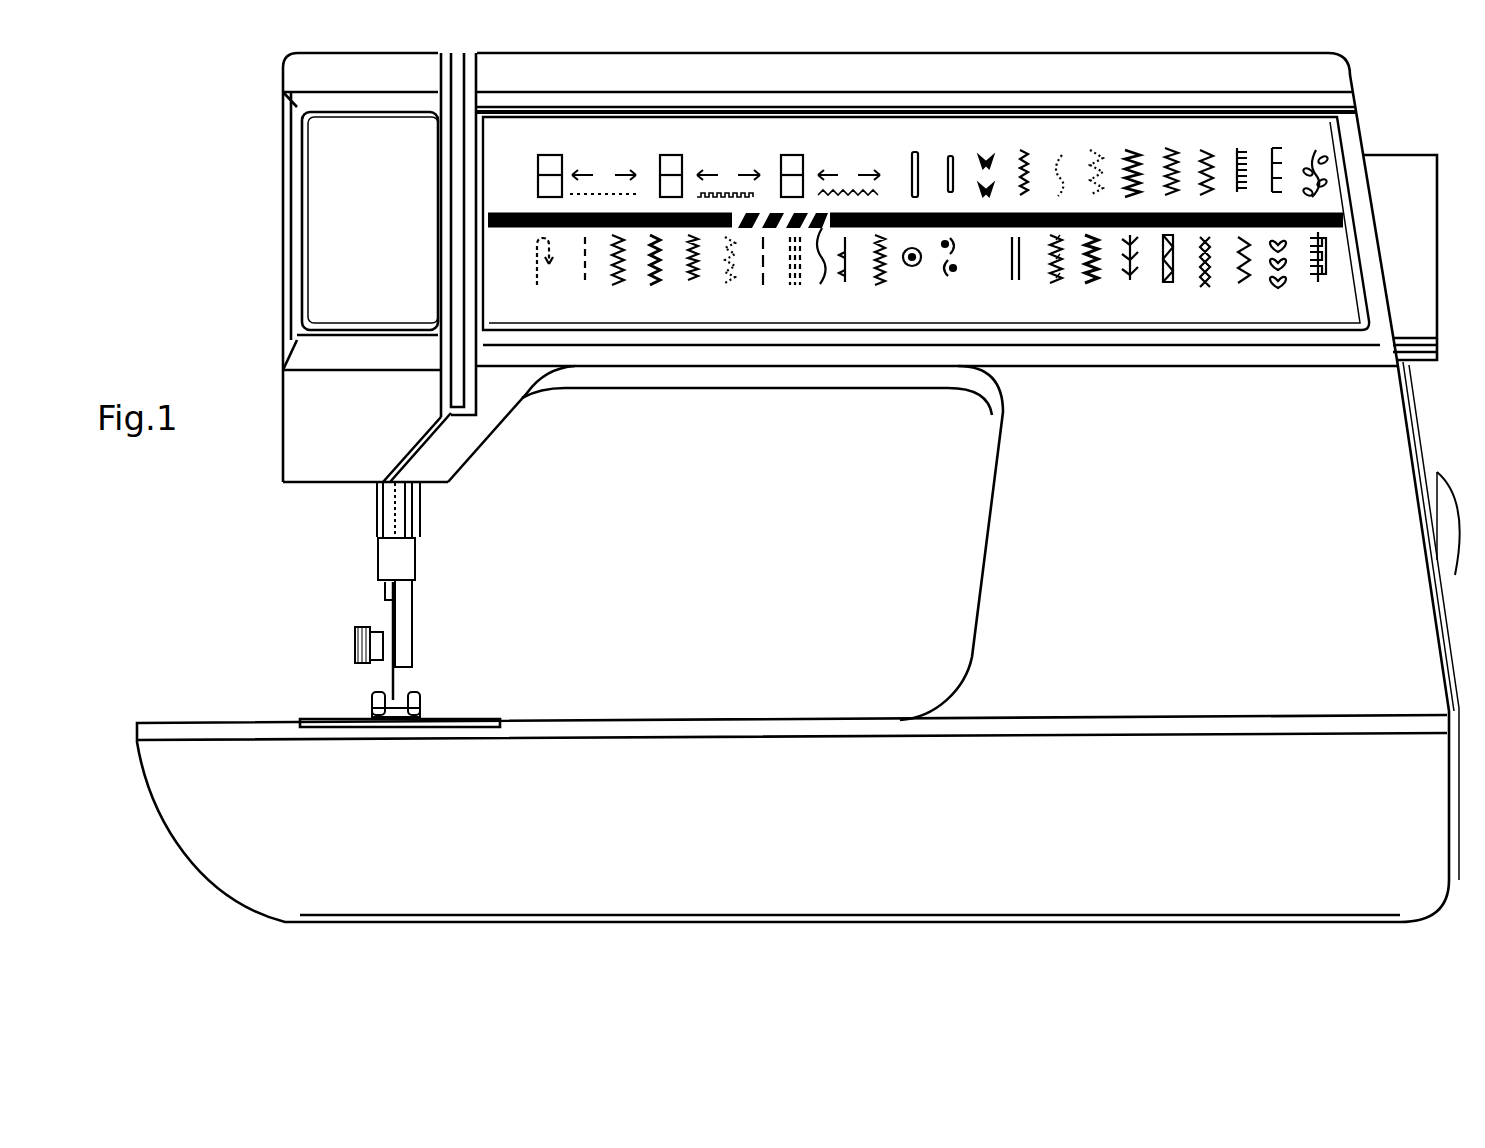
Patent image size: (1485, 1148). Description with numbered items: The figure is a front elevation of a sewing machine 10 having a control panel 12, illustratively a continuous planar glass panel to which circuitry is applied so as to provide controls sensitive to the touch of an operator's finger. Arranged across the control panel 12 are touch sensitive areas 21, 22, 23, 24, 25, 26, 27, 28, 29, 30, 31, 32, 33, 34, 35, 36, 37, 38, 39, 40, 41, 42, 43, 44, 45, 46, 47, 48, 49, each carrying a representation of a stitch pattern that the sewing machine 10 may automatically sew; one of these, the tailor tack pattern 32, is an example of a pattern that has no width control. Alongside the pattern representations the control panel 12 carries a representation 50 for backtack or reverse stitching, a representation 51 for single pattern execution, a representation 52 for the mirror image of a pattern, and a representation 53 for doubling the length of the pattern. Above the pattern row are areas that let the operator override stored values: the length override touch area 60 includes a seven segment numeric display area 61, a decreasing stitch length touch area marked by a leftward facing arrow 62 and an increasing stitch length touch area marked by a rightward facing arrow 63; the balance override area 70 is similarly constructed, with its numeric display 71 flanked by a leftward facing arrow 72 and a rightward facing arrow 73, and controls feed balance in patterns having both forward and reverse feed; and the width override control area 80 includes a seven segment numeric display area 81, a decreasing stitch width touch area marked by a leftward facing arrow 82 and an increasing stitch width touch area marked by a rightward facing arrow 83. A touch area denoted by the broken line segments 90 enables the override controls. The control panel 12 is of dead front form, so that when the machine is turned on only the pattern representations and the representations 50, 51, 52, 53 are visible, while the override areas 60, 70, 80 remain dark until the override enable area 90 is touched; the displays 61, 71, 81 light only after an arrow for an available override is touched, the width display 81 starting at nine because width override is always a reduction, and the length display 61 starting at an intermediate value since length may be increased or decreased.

The sewing machine 10 is at (254, 130).
The control panel 12 is at (1330, 130).
The touch sensitive area 21 is at (585, 285).
The touch sensitive area 22 is at (618, 285).
The touch sensitive area 23 is at (655, 285).
The touch sensitive area 24 is at (696, 280).
The touch sensitive area 25 is at (730, 283).
The touch sensitive area 26 is at (763, 285).
The touch sensitive area 27 is at (795, 285).
The touch sensitive area 28 is at (845, 282).
The touch sensitive area 29 is at (880, 285).
The touch sensitive area 30 is at (919, 168).
The touch sensitive area 31 is at (951, 155).
The tailor tack pattern 32 is at (988, 155).
The touch sensitive area 33 is at (1024, 150).
The touch sensitive area 34 is at (1060, 155).
The touch sensitive area 35 is at (1097, 150).
The touch sensitive area 36 is at (1132, 155).
The touch sensitive area 37 is at (1170, 150).
The touch sensitive area 38 is at (1215, 135).
The touch sensitive area 39 is at (1240, 148).
The touch sensitive area 40 is at (1282, 165).
The touch sensitive area 41 is at (1315, 150).
The touch sensitive area 42 is at (1055, 280).
The touch sensitive area 43 is at (1090, 283).
The touch sensitive area 44 is at (1130, 280).
The touch sensitive area 45 is at (1165, 282).
The touch sensitive area 46 is at (1205, 282).
The touch sensitive area 47 is at (1244, 283).
The touch sensitive area 48 is at (1278, 282).
The touch sensitive area 49 is at (1318, 282).
The backtack representation 50 is at (537, 284).
The single pattern representation 51 is at (912, 266).
The mirror image representation 52 is at (950, 275).
The double stitch length representation 53 is at (985, 270).
The length override touch area 60 is at (597, 118).
The numeric display area 61 is at (538, 185).
The decreasing stitch length touch area 62 is at (574, 178).
The increasing stitch length touch area 63 is at (636, 168).
The balance override area 70 is at (718, 128).
The numeric display 71 is at (670, 153).
The balance decrease key 72 is at (697, 176).
The balance increase key 73 is at (760, 172).
The width override control area 80 is at (845, 128).
The numeric display area 81 is at (790, 153).
The decreasing stitch width touch area 82 is at (818, 174).
The increasing stitch width touch area 83 is at (878, 172).
The override enable touch area 90 is at (820, 272).